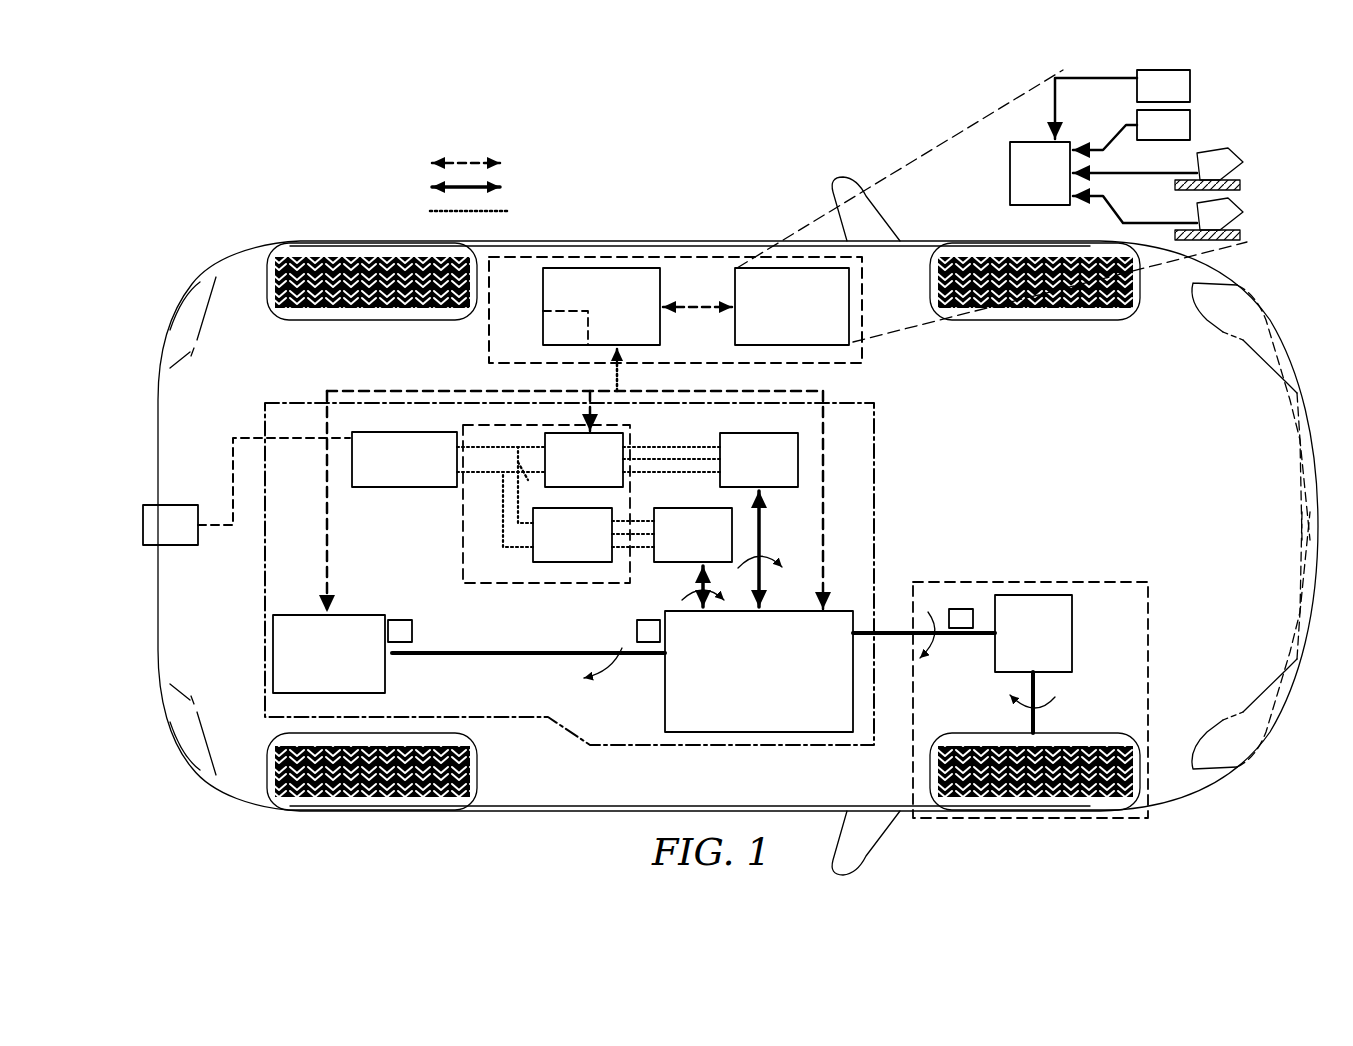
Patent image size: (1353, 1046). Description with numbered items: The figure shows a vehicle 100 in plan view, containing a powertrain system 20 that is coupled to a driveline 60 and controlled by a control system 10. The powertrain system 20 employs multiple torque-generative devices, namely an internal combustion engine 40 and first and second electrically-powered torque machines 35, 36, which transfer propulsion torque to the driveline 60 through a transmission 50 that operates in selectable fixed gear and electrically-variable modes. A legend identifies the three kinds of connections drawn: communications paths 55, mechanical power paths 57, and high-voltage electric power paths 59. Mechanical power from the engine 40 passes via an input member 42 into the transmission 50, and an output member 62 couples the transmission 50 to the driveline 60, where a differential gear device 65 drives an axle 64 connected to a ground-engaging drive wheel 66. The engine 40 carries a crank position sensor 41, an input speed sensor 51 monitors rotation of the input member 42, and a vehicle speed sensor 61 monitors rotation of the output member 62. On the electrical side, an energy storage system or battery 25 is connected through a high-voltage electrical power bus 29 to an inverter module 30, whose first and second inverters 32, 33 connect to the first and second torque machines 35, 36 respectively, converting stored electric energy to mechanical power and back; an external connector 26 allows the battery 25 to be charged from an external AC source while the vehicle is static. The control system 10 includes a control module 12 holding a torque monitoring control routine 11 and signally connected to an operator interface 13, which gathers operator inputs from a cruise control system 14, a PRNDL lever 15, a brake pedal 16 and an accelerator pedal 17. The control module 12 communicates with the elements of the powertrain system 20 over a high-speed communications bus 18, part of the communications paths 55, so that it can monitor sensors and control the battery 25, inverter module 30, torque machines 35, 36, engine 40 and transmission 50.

The control system 10 is at (675, 324).
The torque monitoring control routine 11 is at (565, 328).
The control module 12 is at (601, 329).
The operator interface 13 is at (1040, 173).
The cruise control system 14 is at (1122, 104).
The PRNDL lever 15 is at (1131, 130).
The brake pedal 16 is at (1192, 168).
The accelerator pedal 17 is at (1192, 210).
The communications bus 18 is at (806, 389).
The powertrain system 20 is at (879, 480).
The energy storage system 25 is at (404, 459).
The external connector 26 is at (246, 491).
The high-voltage electrical power bus 29 is at (500, 500).
The inverter module 30 is at (546, 583).
The first inverter 32 is at (572, 535).
The second inverter 33 is at (584, 460).
The first torque machine 35 is at (693, 557).
The second torque machine 36 is at (759, 520).
The engine 40 is at (329, 654).
The crank position sensor 41 is at (413, 630).
The input member 42 is at (447, 657).
The transmission 50 is at (759, 671).
The input speed sensor 51 is at (636, 630).
The communications paths 55 is at (487, 164).
The mechanical power paths 57 is at (487, 188).
The high-voltage electric power paths 59 is at (486, 212).
The driveline 60 is at (1033, 580).
The vehicle speed sensor 61 is at (961, 608).
The output member 62 is at (890, 630).
The axle 64 is at (1040, 692).
The differential gear device 65 is at (1033, 633).
The drive wheel 66 is at (1080, 732).
The vehicle 100 is at (738, 472).